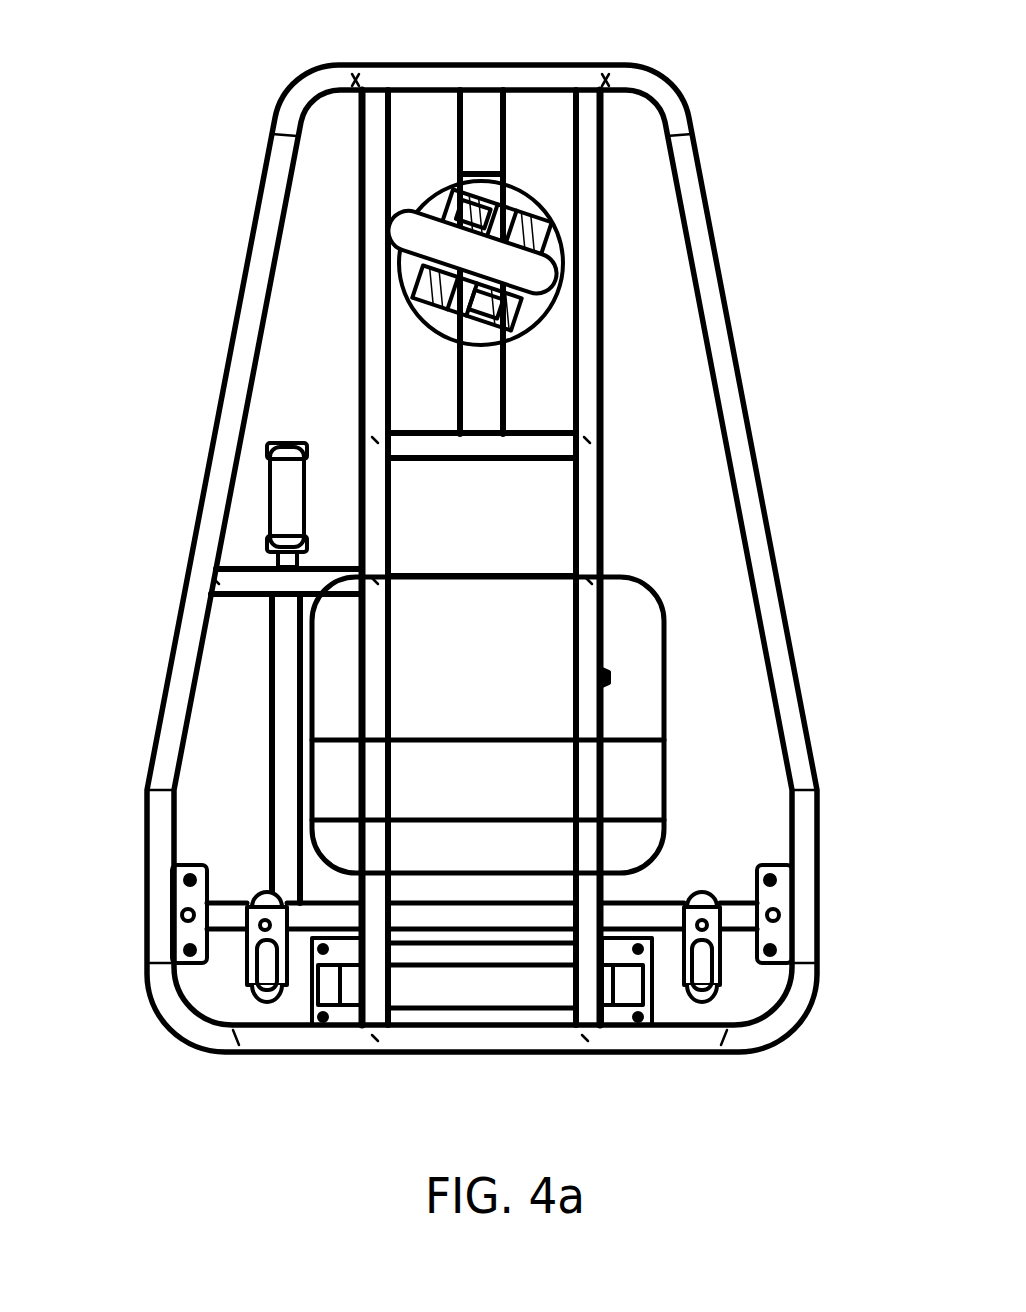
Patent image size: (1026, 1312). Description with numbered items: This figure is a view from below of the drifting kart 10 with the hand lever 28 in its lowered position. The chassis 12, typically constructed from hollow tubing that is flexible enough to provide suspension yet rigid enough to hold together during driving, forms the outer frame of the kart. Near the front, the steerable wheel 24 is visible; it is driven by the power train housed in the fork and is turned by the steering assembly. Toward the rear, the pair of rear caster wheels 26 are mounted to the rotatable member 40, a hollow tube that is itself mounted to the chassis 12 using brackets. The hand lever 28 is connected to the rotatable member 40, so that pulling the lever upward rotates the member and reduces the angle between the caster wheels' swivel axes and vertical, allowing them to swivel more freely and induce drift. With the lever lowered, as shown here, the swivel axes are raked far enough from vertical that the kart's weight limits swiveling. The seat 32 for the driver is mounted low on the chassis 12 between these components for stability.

The drifting kart 10 is at (205, 183).
The chassis 12 is at (740, 349).
The steerable wheel 24 is at (507, 268).
The rear caster wheels 26 is at (250, 982).
The hand lever 28 is at (278, 483).
The seat 32 is at (618, 613).
The rotatable member 40 is at (653, 913).